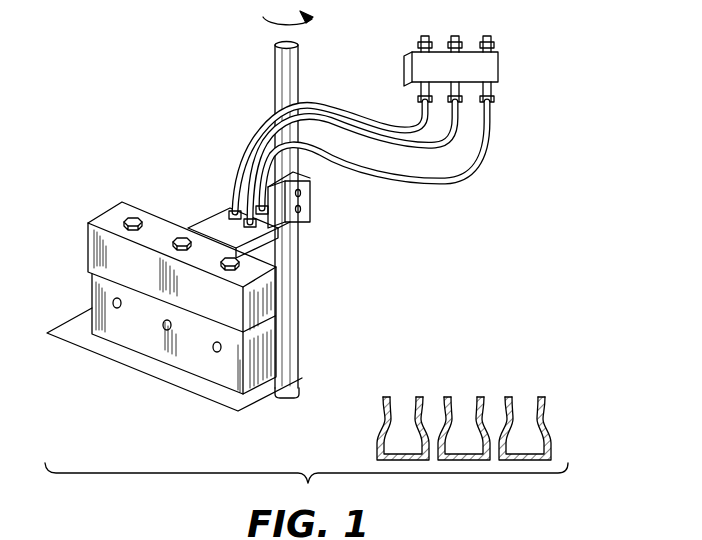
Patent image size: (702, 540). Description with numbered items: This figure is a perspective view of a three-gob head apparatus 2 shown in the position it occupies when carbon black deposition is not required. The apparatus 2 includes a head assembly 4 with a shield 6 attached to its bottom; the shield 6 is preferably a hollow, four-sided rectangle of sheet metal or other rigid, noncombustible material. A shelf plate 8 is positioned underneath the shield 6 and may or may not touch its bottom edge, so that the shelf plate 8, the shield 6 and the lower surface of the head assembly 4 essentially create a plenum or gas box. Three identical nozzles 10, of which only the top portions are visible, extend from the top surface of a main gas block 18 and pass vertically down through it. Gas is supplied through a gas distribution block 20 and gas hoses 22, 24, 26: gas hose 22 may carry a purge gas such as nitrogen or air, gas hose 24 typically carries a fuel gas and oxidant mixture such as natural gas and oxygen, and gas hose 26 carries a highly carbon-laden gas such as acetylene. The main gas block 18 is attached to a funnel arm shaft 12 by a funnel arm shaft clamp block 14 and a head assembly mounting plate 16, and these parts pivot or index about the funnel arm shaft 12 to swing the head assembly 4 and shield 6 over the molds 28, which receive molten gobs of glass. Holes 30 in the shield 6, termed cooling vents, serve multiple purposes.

The apparatus 2 is at (226, 119).
The head assembly 4 is at (88, 248).
The shield 6 is at (158, 335).
The shelf plate 8 is at (90, 340).
The nozzles 10 is at (228, 257).
The funnel arm shaft 12 is at (303, 58).
The funnel arm shaft clamp block 14 is at (312, 202).
The head assembly mounting plate 16 is at (290, 222).
The main gas block 18 is at (159, 273).
The gas distribution block 20 is at (502, 70).
The gas hose 22 is at (458, 172).
The gas hose 24 is at (416, 127).
The gas hose 26 is at (430, 147).
The molds 28 is at (404, 396).
The holes 30 is at (212, 350).